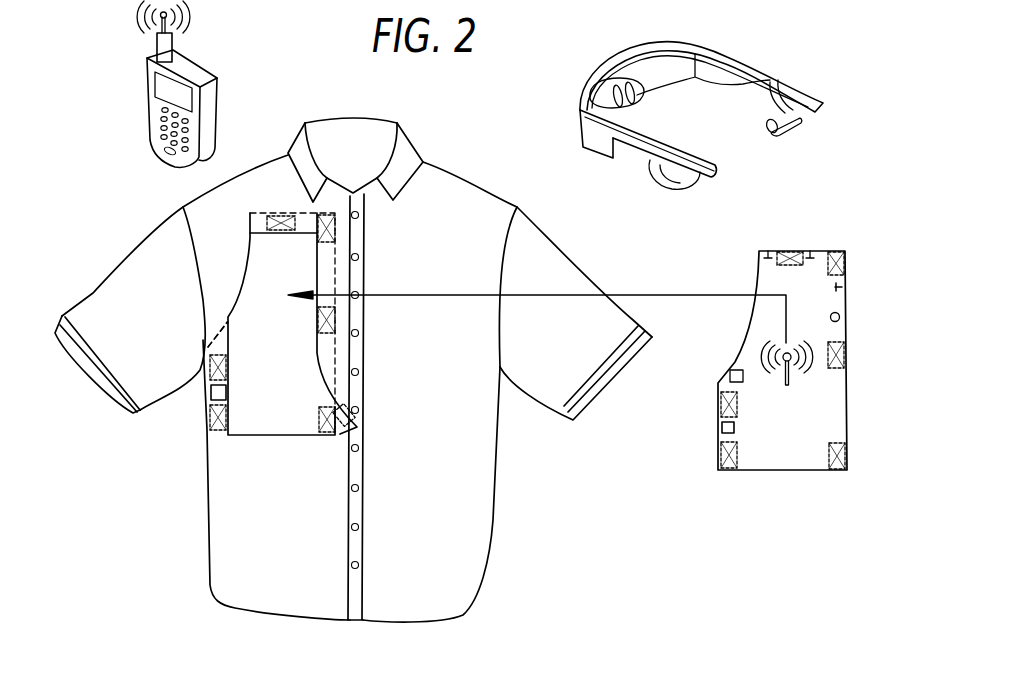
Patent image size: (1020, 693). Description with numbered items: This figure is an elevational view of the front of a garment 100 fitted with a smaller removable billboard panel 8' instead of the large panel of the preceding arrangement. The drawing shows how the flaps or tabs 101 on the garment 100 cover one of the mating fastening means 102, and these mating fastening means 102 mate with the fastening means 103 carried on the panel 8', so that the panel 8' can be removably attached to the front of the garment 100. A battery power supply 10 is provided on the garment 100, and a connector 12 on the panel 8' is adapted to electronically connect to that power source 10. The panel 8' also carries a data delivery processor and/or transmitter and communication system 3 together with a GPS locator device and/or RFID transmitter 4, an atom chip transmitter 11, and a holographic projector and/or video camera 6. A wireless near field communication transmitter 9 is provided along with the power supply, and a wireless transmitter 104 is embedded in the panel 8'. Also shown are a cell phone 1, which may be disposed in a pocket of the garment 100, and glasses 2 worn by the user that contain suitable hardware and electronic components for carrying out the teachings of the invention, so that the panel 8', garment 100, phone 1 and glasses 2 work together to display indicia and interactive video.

The cell phone 1 is at (147, 97).
The glasses 2 is at (717, 167).
The data delivery processor and/or transmitter and communication system 3 is at (768, 257).
The GPS locator device and/or RFID transmitter 4 is at (810, 257).
The holographic projector and/or video camera 6 is at (840, 317).
The smaller removable panel 8' is at (775, 347).
The wireless near field communication transmitter 9 is at (730, 375).
The battery power supply 10 is at (210, 392).
The atom chip transmitter 11 is at (842, 287).
The connector 12 is at (722, 427).
The garment 100 is at (458, 583).
The flaps or tabs 101 is at (327, 355).
The mating fastening means 102 is at (220, 435).
The fastening means 103 is at (845, 450).
The wireless transmitter 104 is at (763, 357).